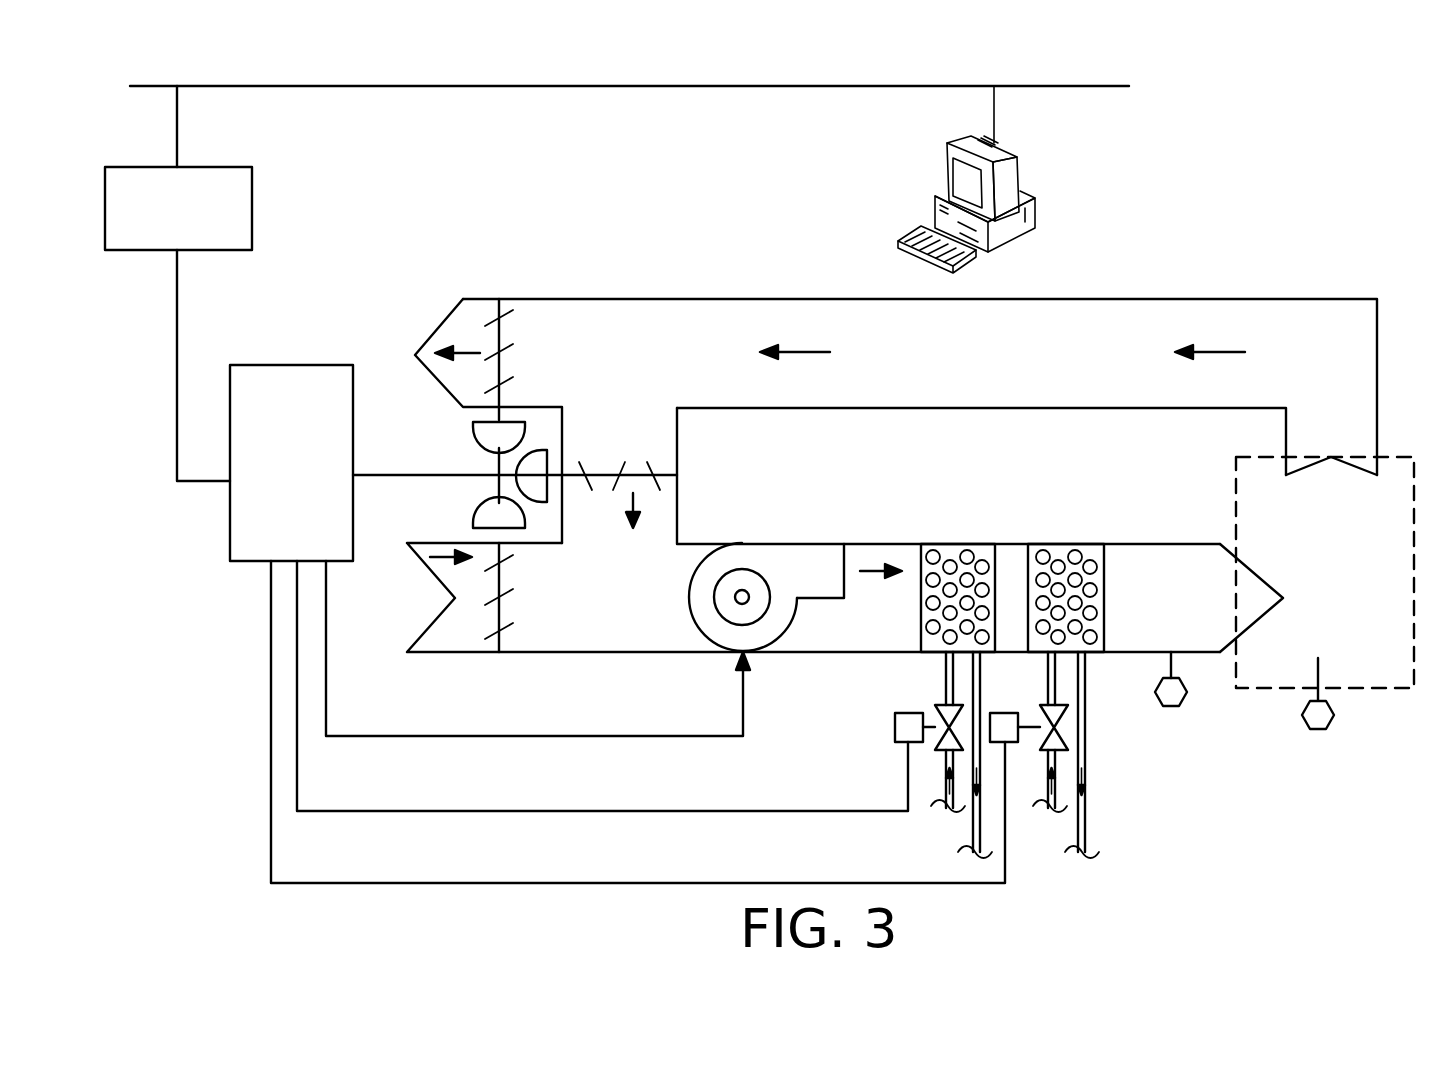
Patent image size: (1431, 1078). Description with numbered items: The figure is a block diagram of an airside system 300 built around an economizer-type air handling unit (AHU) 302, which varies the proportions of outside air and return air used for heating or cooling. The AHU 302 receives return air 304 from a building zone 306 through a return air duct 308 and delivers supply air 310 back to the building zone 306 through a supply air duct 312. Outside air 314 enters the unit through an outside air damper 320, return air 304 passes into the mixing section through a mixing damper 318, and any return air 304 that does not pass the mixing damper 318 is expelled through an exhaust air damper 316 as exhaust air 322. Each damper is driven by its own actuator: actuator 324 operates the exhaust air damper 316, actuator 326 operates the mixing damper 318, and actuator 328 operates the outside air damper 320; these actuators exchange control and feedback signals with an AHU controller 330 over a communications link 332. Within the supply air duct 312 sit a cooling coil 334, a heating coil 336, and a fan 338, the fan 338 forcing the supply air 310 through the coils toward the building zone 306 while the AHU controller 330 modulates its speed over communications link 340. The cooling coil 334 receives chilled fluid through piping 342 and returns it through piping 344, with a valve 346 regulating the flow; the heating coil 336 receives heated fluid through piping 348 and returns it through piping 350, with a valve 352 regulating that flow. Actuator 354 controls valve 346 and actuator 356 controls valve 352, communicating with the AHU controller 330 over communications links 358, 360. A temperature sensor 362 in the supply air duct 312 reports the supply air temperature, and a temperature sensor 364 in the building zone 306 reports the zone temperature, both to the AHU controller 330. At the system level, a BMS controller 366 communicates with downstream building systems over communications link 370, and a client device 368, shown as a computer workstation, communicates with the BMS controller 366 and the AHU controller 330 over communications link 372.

The airside system 300 is at (540, 54).
The economizer-type air handling unit 302 is at (1218, 183).
The return air 304 is at (1338, 376).
The building zone 306 is at (1390, 668).
The return air duct 308 is at (1235, 299).
The supply air 310 is at (1199, 544).
The supply air duct 312 is at (1147, 544).
The outside air 314 is at (391, 655).
The exhaust air damper 316 is at (512, 343).
The mixing damper 318 is at (660, 472).
The outside air damper 320 is at (509, 612).
The exhaust air 322 is at (392, 308).
The actuator 324 is at (518, 430).
The actuator 326 is at (548, 460).
The actuator 328 is at (490, 520).
The AHU controller 330 is at (263, 375).
The communications link 332 is at (406, 470).
The cooling coil 334 is at (936, 544).
The heating coil 336 is at (1046, 544).
The fan 338 is at (782, 613).
The communications link 340 is at (556, 736).
The piping 342 is at (946, 672).
The piping 344 is at (973, 838).
The valve 346 is at (940, 708).
The piping 348 is at (1048, 672).
The piping 350 is at (1085, 823).
The valve 352 is at (1046, 708).
The actuator 354 is at (900, 738).
The actuator 356 is at (1012, 737).
The communications link 358 is at (650, 811).
The communications link 360 is at (703, 883).
The temperature sensor 362 is at (1172, 708).
The temperature sensor 364 is at (1320, 731).
The BMS controller 366 is at (245, 209).
The client device 368 is at (1012, 173).
The communications link 370 is at (177, 412).
The communications link 372 is at (290, 86).